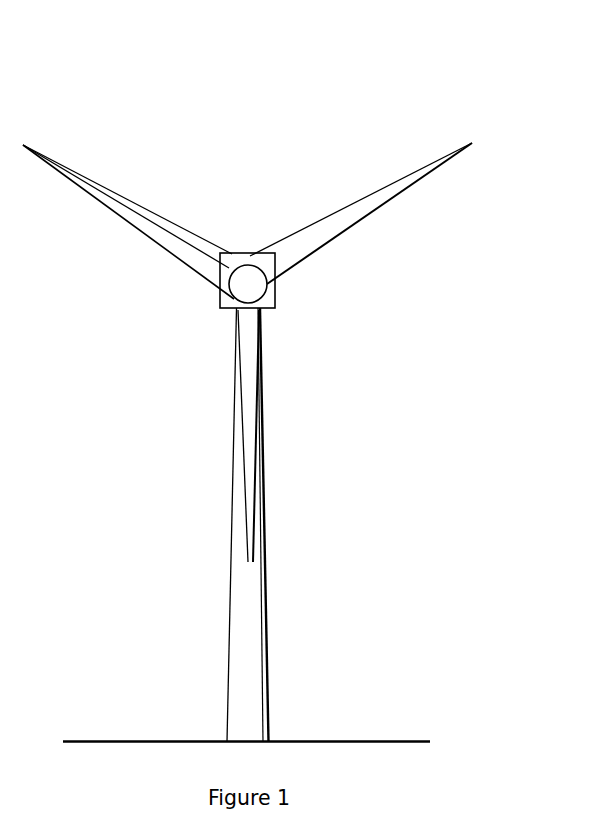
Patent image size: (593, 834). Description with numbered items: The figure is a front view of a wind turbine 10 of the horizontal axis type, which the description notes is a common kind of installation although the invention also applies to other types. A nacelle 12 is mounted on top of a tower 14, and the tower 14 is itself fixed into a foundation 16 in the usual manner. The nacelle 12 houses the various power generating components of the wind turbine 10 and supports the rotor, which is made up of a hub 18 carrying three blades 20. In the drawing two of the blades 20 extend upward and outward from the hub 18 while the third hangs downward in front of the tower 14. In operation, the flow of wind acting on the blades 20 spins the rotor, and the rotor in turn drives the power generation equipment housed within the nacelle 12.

The wind turbine 10 is at (501, 77).
The nacelle 12 is at (248, 254).
The tower 14 is at (228, 633).
The foundation 16 is at (272, 740).
The hub 18 is at (249, 289).
The blades 20 is at (130, 205).